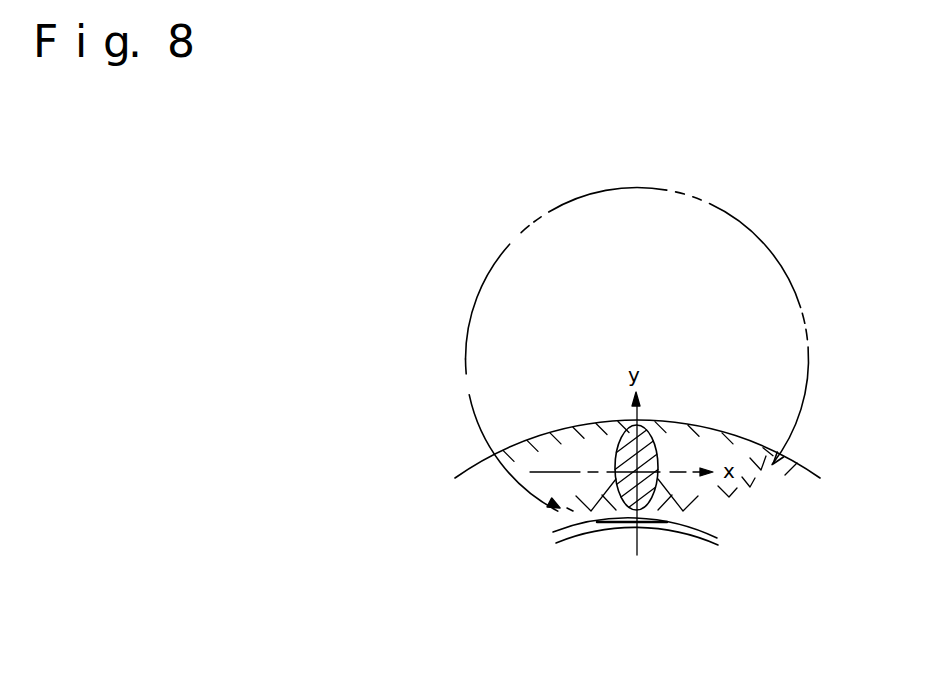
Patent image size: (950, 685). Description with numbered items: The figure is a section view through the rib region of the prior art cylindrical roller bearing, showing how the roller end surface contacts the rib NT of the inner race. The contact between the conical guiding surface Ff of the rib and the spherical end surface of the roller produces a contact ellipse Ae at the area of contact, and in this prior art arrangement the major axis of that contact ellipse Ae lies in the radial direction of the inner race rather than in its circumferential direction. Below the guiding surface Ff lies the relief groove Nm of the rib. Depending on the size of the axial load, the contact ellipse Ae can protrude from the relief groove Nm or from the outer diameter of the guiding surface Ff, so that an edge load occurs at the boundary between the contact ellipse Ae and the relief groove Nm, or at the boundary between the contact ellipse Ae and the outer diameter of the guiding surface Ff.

The rib of the inner race NT is at (702, 424).
The guiding surface of the rib Ff is at (798, 464).
The contact ellipse Ae is at (583, 510).
The relief groove Nm is at (690, 518).